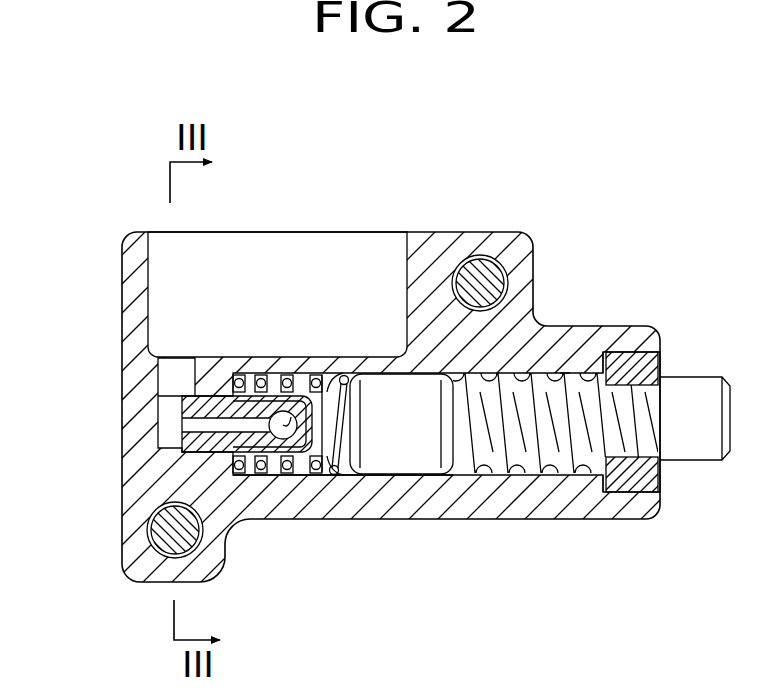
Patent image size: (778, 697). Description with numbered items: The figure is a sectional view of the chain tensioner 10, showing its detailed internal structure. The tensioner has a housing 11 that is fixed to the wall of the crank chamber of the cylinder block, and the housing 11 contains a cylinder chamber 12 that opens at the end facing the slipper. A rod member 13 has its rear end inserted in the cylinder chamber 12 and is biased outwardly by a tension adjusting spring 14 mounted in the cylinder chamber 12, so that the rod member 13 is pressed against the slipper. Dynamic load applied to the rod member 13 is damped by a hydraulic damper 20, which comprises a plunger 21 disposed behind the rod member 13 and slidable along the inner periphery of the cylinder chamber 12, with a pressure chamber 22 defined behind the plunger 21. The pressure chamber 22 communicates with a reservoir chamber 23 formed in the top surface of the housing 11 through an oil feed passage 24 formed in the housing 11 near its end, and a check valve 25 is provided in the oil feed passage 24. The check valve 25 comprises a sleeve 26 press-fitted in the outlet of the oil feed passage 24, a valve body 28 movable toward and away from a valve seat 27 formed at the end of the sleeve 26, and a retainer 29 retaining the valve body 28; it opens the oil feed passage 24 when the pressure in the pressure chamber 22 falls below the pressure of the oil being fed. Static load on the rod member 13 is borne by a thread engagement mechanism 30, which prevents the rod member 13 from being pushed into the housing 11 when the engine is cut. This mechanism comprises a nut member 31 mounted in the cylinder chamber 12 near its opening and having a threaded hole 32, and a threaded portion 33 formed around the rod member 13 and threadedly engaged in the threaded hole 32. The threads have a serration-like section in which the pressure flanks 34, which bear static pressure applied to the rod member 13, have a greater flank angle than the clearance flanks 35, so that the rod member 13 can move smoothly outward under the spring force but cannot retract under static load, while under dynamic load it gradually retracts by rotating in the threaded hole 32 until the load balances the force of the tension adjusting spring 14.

The chain tensioner 10 is at (110, 238).
The housing 11 is at (437, 231).
The cylinder chamber 12 is at (472, 477).
The rod member 13 is at (700, 390).
The tension adjusting spring 14 is at (350, 477).
The hydraulic damper 20 is at (373, 372).
The plunger 21 is at (415, 458).
The pressure chamber 22 is at (298, 477).
The reservoir chamber 23 is at (258, 232).
The oil feed passage 24 is at (165, 382).
The check valve 25 is at (250, 392).
The sleeve 26 is at (170, 437).
The valve seat 27 is at (268, 478).
The valve body 28 is at (277, 392).
The retainer 29 is at (336, 377).
The thread engagement mechanism 30 is at (672, 344).
The nut member 31 is at (637, 356).
The threaded hole 32 is at (668, 437).
The threaded portion 33 is at (603, 420).
The pressure flank 34 is at (500, 372).
The clearance flank 35 is at (563, 372).